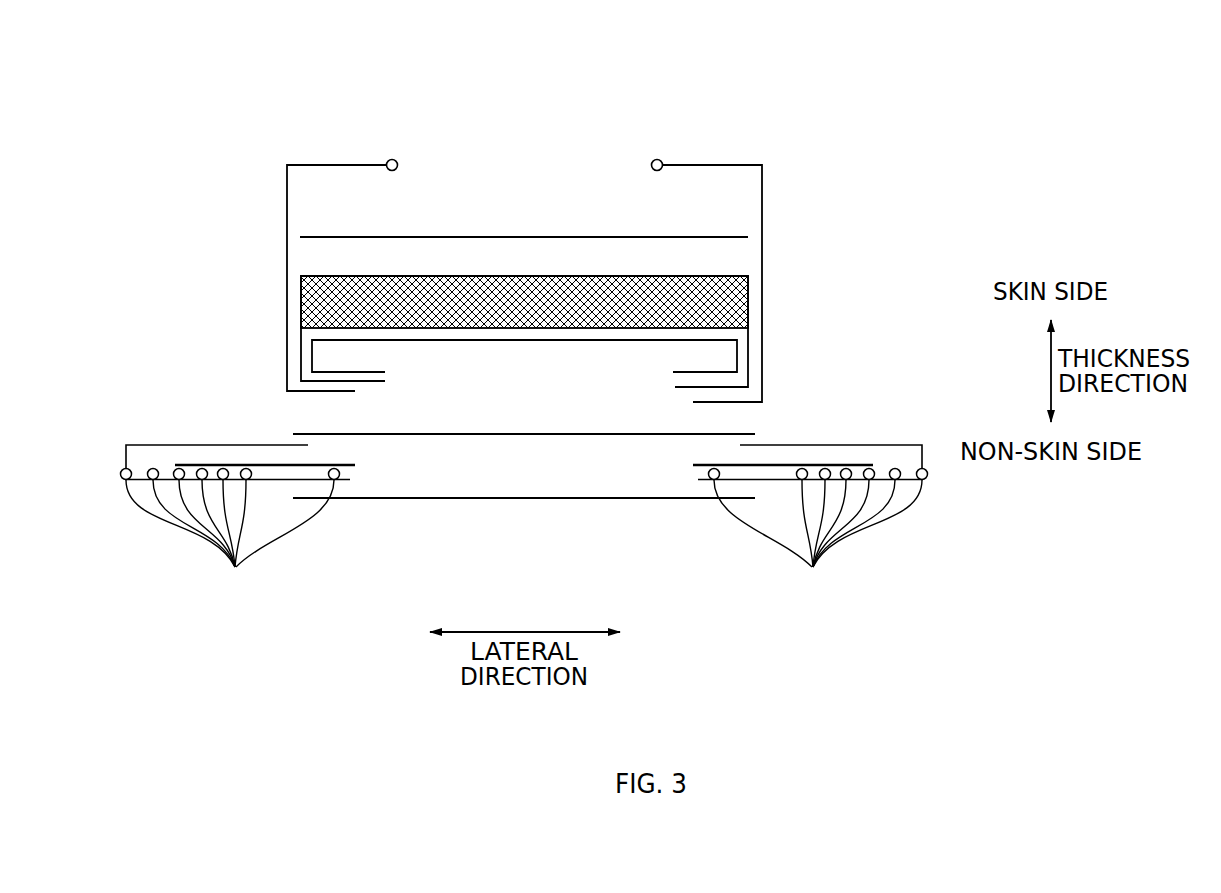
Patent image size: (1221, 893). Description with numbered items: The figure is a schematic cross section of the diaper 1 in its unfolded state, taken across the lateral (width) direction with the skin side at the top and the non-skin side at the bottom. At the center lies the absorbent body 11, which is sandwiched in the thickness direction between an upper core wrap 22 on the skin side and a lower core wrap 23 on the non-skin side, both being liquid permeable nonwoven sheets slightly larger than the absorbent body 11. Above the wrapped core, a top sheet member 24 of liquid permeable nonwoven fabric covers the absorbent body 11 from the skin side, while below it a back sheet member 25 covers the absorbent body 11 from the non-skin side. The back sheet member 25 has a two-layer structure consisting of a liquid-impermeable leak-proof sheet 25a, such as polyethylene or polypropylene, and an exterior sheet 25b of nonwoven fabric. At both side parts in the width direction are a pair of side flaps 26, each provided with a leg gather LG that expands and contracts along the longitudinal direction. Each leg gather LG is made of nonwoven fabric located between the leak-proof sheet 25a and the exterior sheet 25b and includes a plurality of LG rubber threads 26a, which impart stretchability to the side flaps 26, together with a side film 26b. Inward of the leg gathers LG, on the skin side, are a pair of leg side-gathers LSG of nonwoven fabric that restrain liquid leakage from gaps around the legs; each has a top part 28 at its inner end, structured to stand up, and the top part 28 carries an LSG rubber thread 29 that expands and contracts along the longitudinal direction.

The diaper 1 is at (829, 234).
The absorbent body 11 is at (595, 290).
The upper core wrap 22 is at (425, 276).
The lower core wrap 23 is at (578, 341).
The top sheet member 24 is at (523, 237).
The back sheet member 25 is at (524, 497).
The leak-proof sheet 25a is at (641, 435).
The exterior sheet 25b is at (641, 499).
The side flaps 26 is at (540, 478).
The LG rubber threads 26a is at (524, 539).
The side film 26b is at (312, 465).
The top parts 28 is at (525, 122).
The LSG rubber threads 29 is at (407, 154).
The leg side-gathers LSG is at (366, 158).
The leg gathers LG is at (177, 436).